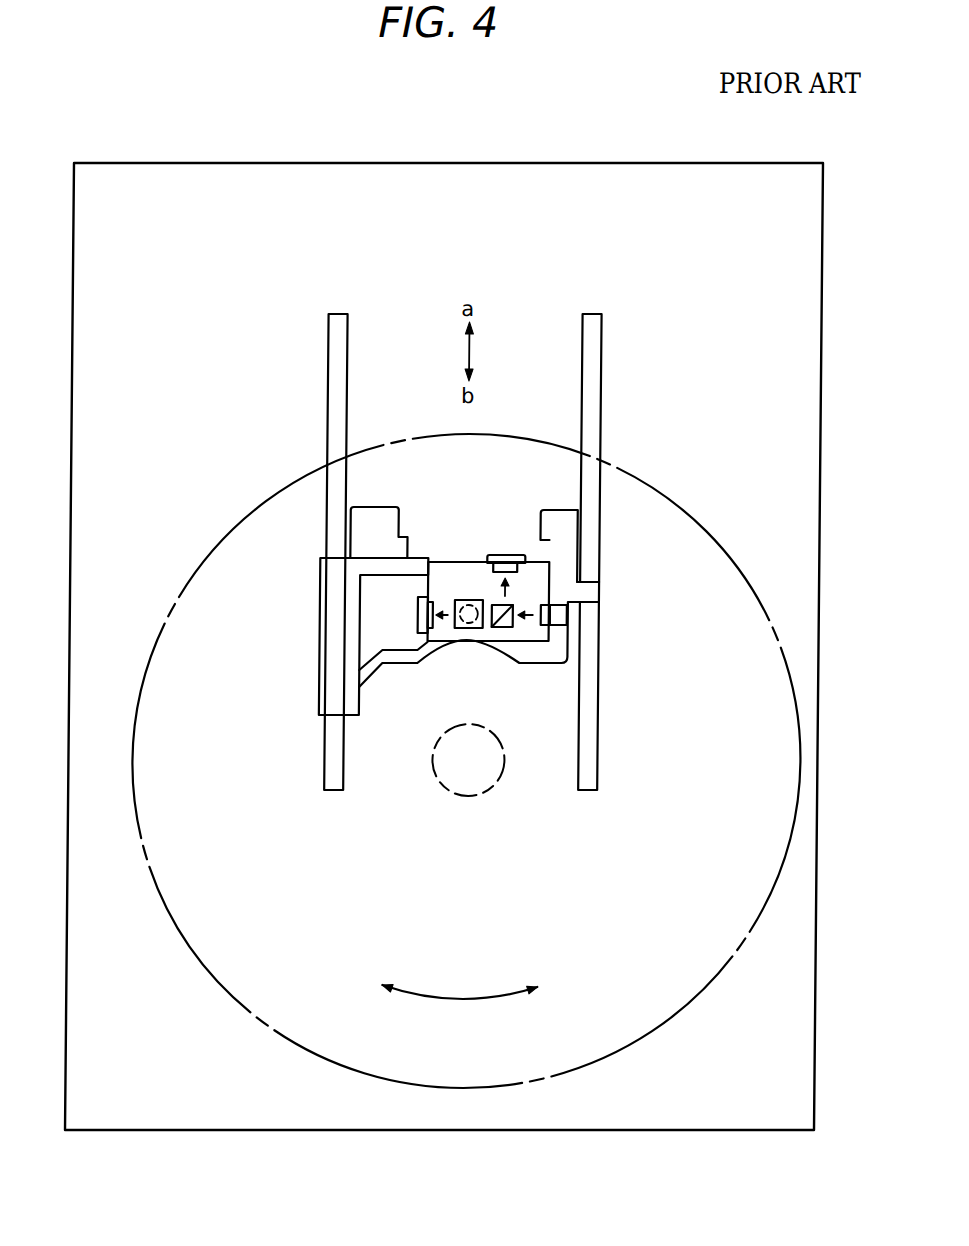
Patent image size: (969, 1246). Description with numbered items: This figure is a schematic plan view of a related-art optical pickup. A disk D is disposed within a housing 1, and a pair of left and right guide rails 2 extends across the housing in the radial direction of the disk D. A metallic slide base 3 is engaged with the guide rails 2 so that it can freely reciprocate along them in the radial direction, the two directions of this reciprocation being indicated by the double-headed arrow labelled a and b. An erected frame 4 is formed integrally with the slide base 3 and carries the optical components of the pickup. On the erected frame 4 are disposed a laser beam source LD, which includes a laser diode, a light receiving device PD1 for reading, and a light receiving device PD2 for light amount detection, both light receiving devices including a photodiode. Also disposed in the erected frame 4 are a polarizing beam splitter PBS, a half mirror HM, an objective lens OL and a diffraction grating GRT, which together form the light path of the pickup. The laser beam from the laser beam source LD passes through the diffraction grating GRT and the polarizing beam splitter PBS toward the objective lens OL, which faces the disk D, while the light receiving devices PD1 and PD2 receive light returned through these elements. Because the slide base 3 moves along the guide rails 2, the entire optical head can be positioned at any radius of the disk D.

The housing 1 is at (453, 179).
The guide rails 2 is at (335, 333).
The slide base 3 is at (324, 633).
The erected frame 4 is at (451, 561).
The disk D is at (303, 497).
The half mirror HM is at (465, 629).
The objective lens OL is at (476, 600).
The polarizing beam splitter PBS is at (509, 630).
The light receiving device for reading PD1 is at (512, 555).
The light receiving device for light amount detection PD2 is at (422, 611).
The diffraction grating GRT is at (549, 604).
The laser beam source LD is at (564, 614).